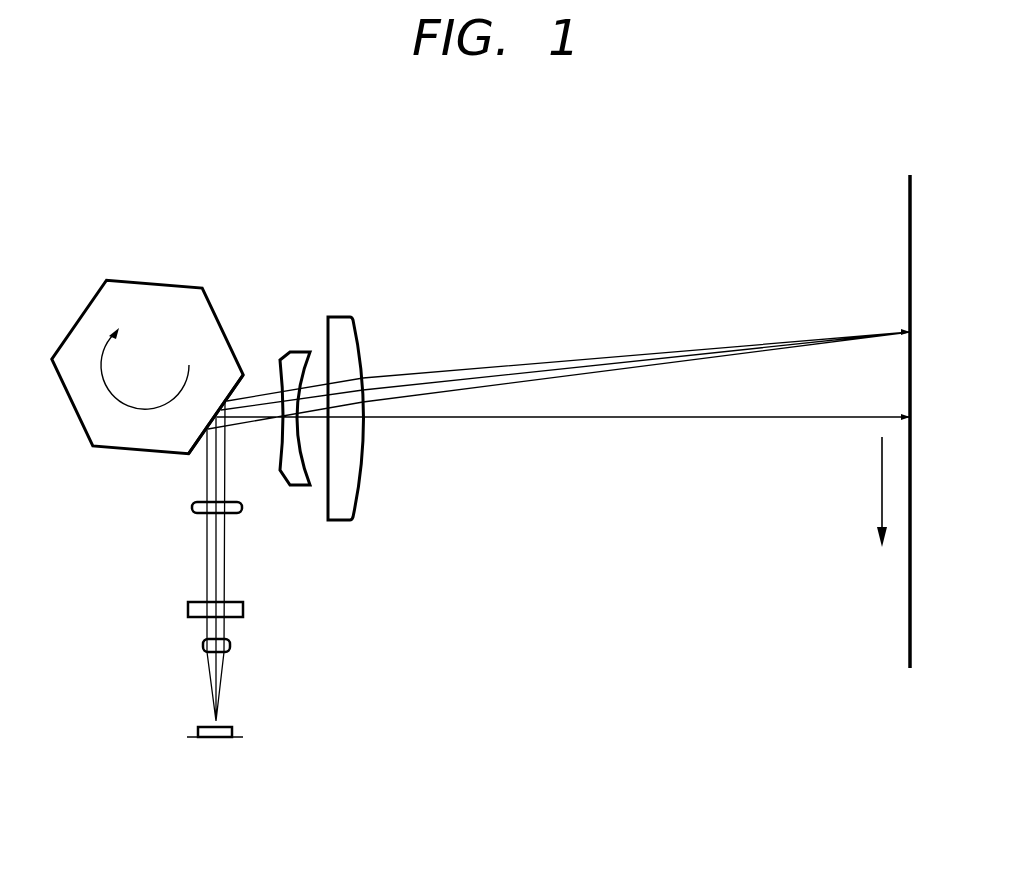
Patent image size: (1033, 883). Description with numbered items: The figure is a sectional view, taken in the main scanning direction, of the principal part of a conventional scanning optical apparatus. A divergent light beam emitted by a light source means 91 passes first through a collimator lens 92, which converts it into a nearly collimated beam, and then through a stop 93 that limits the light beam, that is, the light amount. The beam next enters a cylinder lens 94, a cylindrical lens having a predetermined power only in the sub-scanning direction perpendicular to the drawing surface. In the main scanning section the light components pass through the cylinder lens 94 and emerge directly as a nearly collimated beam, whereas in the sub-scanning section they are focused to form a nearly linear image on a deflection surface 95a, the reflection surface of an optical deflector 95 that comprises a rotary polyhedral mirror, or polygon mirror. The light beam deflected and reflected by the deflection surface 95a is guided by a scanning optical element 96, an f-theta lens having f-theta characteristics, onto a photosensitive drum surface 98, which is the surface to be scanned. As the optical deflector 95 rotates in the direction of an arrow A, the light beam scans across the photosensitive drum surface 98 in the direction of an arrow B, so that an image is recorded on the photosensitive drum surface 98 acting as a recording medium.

The light source means 91 is at (233, 728).
The collimator lens 92 is at (232, 645).
The stop 93 is at (247, 608).
The cylinder lens 94 is at (248, 510).
The optical deflector 95 is at (113, 427).
The deflection surface 95a is at (200, 442).
The scanning optical element 96 is at (372, 284).
The photosensitive drum surface 98 is at (910, 210).
The arrow A is at (103, 383).
The arrow B is at (880, 490).